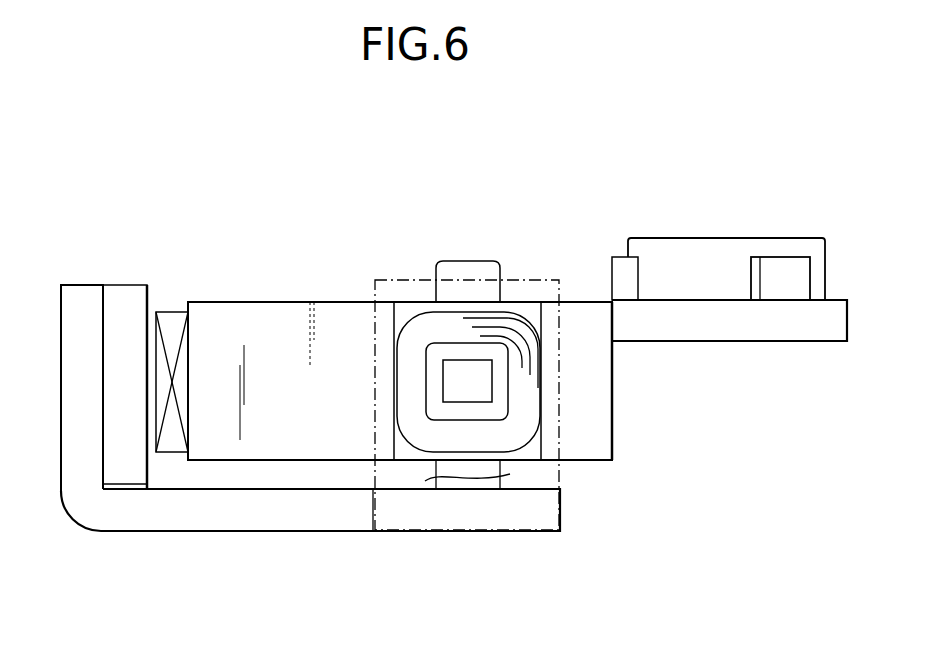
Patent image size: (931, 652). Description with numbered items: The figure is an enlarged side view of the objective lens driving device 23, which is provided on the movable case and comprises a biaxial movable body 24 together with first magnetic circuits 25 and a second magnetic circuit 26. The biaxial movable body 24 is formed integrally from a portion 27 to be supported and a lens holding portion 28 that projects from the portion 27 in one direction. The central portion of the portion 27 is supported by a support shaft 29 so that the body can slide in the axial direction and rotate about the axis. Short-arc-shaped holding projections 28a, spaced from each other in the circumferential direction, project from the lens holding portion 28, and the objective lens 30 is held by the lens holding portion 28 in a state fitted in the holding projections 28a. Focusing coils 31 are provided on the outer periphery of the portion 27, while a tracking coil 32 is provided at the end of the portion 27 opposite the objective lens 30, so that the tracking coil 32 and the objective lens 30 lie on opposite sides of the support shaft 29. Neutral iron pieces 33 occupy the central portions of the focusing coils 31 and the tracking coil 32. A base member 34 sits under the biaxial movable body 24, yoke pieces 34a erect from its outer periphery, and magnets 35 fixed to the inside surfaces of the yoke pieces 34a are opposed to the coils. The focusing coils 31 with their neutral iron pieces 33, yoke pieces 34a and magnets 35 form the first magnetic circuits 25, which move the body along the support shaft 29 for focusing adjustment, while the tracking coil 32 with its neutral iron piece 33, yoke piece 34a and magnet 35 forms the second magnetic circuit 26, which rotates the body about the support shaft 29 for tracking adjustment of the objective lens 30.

The objective lens driving device 23 is at (740, 182).
The biaxial movable body 24 is at (337, 302).
The first magnetic circuit 25 is at (570, 233).
The second magnetic circuit 26 is at (168, 213).
The portion to be supported 27 is at (256, 302).
The lens holding portion 28 is at (730, 330).
The holding projection 28a is at (622, 257).
The support shaft 29 is at (467, 260).
The objective lens 30 is at (694, 238).
The focusing coil 31 is at (527, 408).
The tracking coil 32 is at (172, 310).
The neutral iron piece 33 is at (455, 383).
The base member 34 is at (262, 520).
The yoke piece 34a is at (83, 283).
The magnet 35 is at (127, 283).